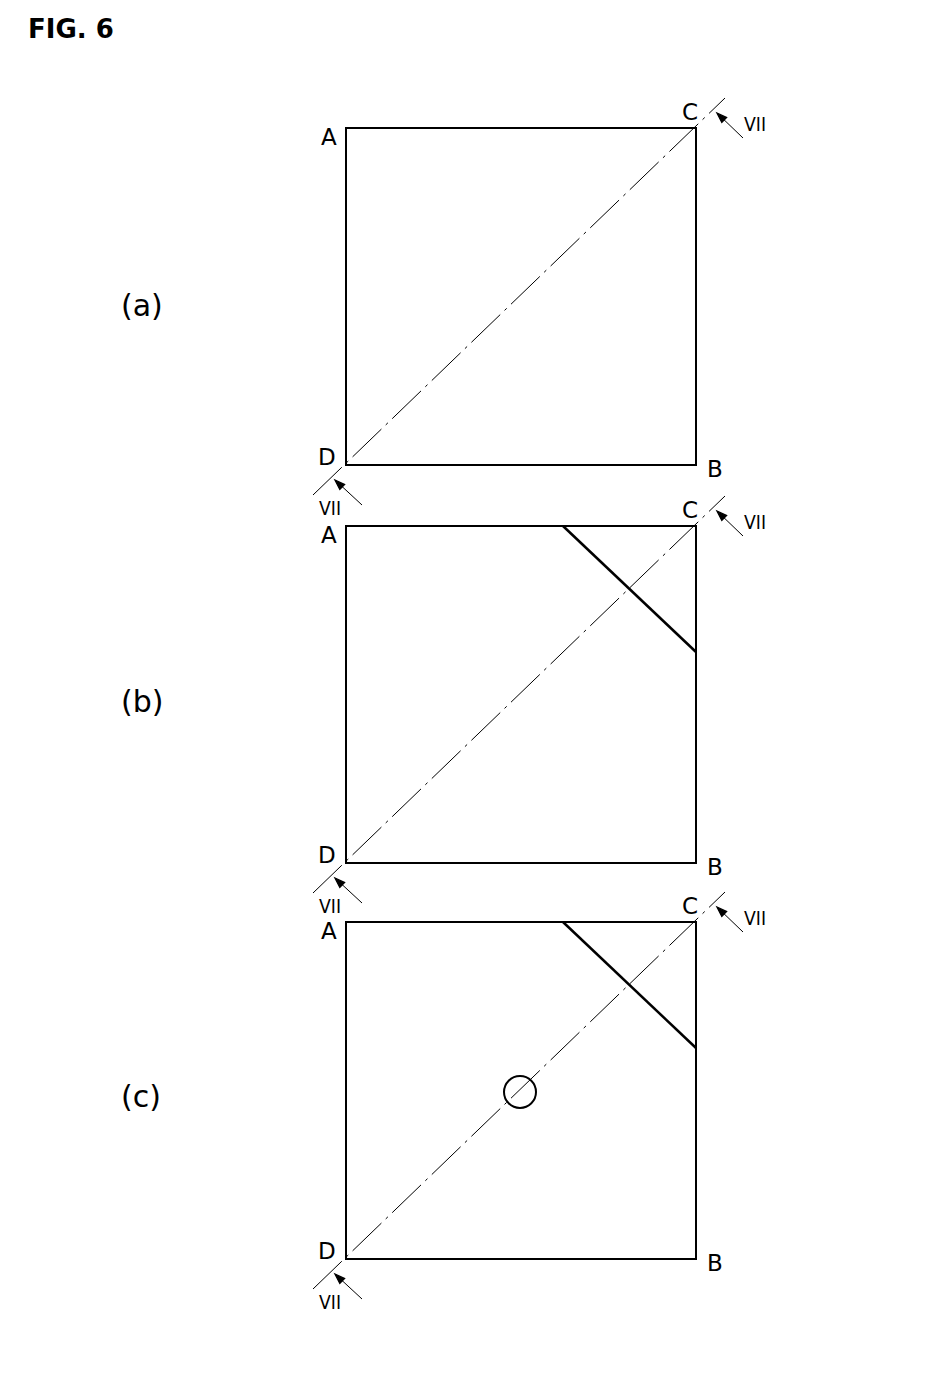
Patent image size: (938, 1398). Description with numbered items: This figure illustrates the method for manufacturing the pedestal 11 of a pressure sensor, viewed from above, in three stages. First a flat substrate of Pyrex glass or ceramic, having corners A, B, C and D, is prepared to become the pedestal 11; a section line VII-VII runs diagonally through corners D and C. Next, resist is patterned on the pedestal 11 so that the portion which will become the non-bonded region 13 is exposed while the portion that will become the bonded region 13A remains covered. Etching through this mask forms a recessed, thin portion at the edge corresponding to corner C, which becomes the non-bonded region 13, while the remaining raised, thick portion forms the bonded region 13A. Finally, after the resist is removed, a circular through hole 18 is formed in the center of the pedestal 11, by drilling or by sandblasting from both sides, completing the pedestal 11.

The pedestal 11 is at (682, 388).
The non-bonded region 13 is at (680, 615).
The bonded region 13A is at (370, 731).
The through hole 18 is at (527, 1107).